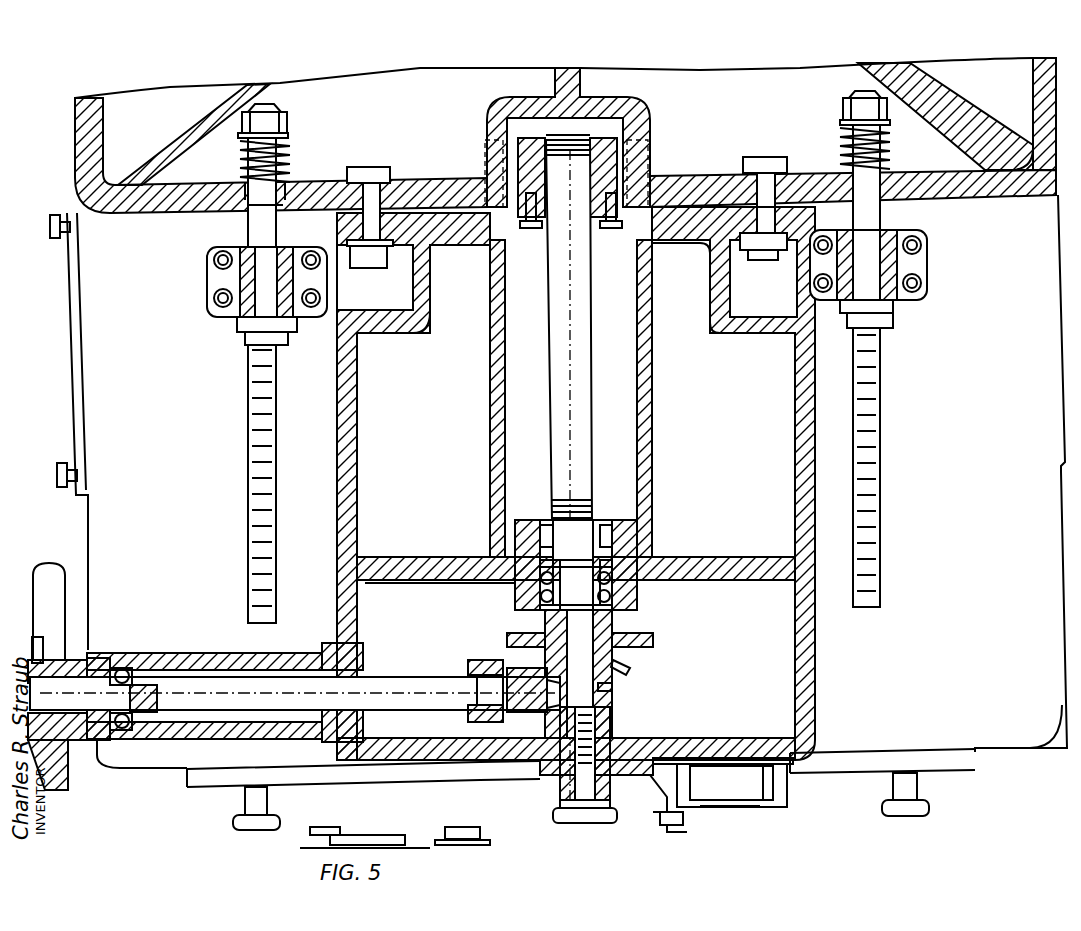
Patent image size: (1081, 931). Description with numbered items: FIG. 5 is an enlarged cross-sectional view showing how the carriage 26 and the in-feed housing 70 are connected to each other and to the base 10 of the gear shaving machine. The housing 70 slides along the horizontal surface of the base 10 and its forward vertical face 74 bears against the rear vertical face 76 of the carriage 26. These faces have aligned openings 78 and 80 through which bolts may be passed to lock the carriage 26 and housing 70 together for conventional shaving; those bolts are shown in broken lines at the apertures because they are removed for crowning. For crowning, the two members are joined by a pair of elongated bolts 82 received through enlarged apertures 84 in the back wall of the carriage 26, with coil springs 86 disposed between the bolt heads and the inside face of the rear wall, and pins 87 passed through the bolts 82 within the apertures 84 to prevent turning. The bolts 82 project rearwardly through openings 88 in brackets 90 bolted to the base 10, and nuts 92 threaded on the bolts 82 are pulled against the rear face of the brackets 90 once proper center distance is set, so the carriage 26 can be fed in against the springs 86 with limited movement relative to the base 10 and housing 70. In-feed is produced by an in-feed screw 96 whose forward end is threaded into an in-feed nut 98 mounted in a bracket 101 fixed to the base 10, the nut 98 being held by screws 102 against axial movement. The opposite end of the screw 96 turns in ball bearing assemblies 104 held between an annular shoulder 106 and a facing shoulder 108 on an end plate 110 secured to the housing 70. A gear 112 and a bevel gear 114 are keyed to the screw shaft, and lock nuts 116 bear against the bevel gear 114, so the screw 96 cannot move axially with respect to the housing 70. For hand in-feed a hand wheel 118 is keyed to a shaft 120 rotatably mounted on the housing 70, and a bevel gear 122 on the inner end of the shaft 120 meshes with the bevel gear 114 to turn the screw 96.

The base 10 is at (100, 513).
The carriage 26 is at (987, 197).
The in-feed housing 70 is at (807, 668).
The forward vertical face 74 is at (680, 200).
The rear vertical face 76 is at (717, 207).
The openings 78 is at (372, 176).
The openings 80 is at (392, 250).
The elongated bolts 82 is at (263, 363).
The enlarged apertures 84 is at (245, 212).
The coil springs 86 is at (243, 165).
The pins 87 is at (240, 210).
The openings 88 is at (283, 322).
The brackets 90 is at (213, 287).
The nuts 92 is at (287, 343).
The in-feed screw 96 is at (562, 398).
The in-feed nut 98 is at (610, 228).
The bracket 101 is at (505, 150).
The screws 102 is at (530, 228).
The ball bearing assemblies 104 is at (640, 587).
The annular shoulder 106 is at (640, 606).
The shoulder 108 is at (603, 523).
The end plate 110 is at (637, 540).
The gear 112 is at (637, 650).
The bevel gear 114 is at (627, 663).
The lock nuts 116 is at (600, 690).
The hand wheel 118 is at (57, 553).
The shaft 120 is at (180, 690).
The bevel gear 122 is at (527, 670).